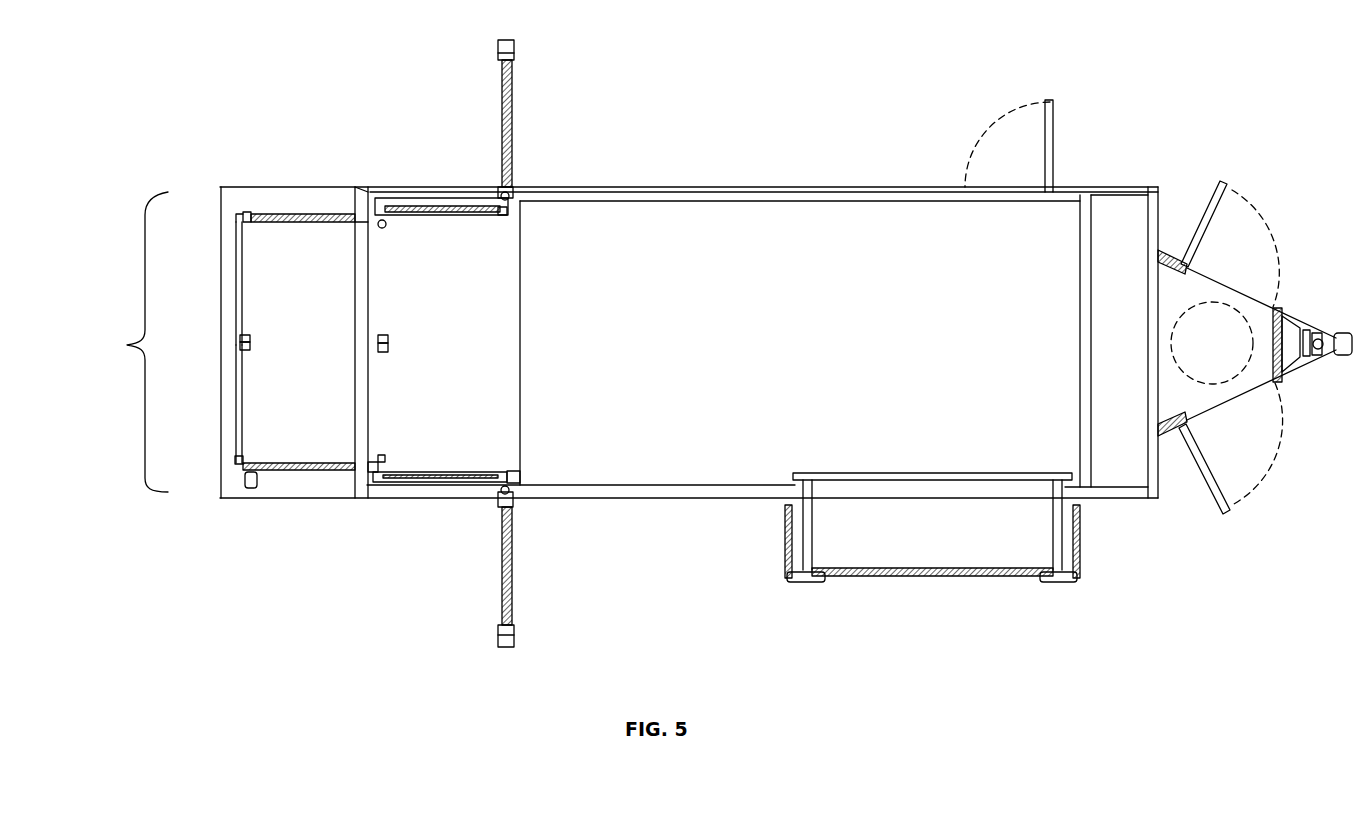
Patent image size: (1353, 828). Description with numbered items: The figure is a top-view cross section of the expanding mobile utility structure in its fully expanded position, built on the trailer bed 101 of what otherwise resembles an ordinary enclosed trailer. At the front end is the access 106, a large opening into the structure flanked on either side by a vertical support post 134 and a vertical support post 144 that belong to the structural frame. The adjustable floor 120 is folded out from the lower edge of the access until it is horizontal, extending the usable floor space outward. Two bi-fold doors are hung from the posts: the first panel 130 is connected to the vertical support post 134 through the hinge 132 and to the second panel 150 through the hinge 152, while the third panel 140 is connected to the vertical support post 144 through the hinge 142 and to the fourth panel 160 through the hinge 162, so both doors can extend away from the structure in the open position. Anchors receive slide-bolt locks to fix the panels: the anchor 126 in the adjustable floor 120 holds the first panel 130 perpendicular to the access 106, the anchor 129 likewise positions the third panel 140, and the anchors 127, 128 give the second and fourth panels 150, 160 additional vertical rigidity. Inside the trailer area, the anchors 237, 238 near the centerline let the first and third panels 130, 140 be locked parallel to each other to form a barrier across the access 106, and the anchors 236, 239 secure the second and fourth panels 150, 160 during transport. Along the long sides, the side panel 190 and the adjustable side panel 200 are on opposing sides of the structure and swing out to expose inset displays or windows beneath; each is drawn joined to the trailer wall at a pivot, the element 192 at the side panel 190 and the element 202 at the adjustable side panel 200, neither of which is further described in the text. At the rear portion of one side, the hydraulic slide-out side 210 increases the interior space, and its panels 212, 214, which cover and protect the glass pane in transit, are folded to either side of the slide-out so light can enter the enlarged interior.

The trailer bed 101 is at (768, 245).
The access 106 is at (125, 342).
The adjustable floor 120 is at (234, 498).
The anchor 126 is at (247, 212).
The anchor 127 is at (252, 338).
The anchor 128 is at (252, 348).
The anchor 129 is at (252, 490).
The first panel 130 is at (280, 216).
The hinge 132 is at (357, 222).
The vertical support post 134 is at (362, 190).
The third panel 140 is at (291, 472).
The hinge 142 is at (368, 462).
The vertical support post 144 is at (365, 480).
The second panel 150 is at (238, 242).
The hinge 152 is at (242, 218).
The fourth panel 160 is at (238, 380).
The hinge 162 is at (237, 472).
The side panel 190 is at (513, 100).
The post pivot 192 is at (500, 194).
The adjustable side panel 200 is at (513, 573).
The post pivot 202 is at (497, 493).
The hydraulic slide-out side 210 is at (916, 560).
The panel 212 is at (1075, 585).
The panel 214 is at (785, 548).
The anchor 236 is at (386, 226).
The anchor 237 is at (390, 338).
The anchor 238 is at (390, 350).
The anchor 239 is at (388, 458).